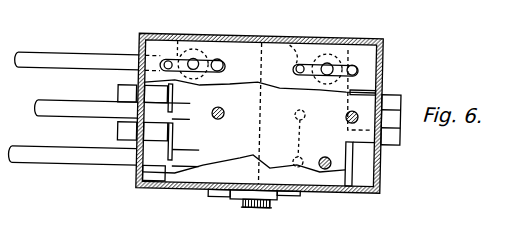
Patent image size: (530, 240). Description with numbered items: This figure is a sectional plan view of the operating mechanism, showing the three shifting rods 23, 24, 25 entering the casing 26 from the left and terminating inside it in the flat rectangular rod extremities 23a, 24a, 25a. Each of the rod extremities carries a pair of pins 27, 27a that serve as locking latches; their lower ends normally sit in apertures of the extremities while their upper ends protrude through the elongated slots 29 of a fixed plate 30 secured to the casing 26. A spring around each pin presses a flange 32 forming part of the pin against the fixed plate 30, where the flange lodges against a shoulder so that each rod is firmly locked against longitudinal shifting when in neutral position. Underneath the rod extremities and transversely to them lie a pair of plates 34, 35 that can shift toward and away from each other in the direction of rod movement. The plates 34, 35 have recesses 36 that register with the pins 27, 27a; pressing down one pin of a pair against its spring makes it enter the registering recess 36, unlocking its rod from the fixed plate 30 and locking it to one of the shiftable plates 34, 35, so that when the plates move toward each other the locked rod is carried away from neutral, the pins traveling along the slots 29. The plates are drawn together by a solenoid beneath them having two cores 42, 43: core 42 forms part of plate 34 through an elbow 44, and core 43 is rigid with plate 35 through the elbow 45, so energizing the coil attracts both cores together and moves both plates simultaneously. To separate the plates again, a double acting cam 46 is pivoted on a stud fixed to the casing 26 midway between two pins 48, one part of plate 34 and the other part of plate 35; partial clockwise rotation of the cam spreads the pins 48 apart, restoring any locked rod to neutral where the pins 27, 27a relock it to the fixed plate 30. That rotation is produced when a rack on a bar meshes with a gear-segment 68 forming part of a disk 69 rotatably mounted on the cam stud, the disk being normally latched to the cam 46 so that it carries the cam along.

The rod 23 is at (49, 64).
The rod 24 is at (62, 112).
The rod 25 is at (53, 157).
The casing 26 is at (155, 192).
The pin 27 is at (192, 60).
The pin 27a is at (328, 58).
The elongated slot 29 is at (168, 62).
The fixed plate 30 is at (312, 69).
The flange 32 is at (221, 60).
The plate 34 is at (243, 169).
The plate 35 is at (317, 115).
The recess 36 is at (223, 66).
The core 42 is at (150, 92).
The core 43 is at (355, 146).
The elbow 44 is at (120, 130).
The elbow 45 is at (397, 136).
The double acting cam 46 is at (217, 200).
The pin 48 is at (242, 208).
The gear-segment 68 is at (260, 208).
The disk 69 is at (264, 210).
The rod extremity 23a is at (244, 88).
The rod extremity 24a is at (287, 133).
The rod extremity 25a is at (178, 158).